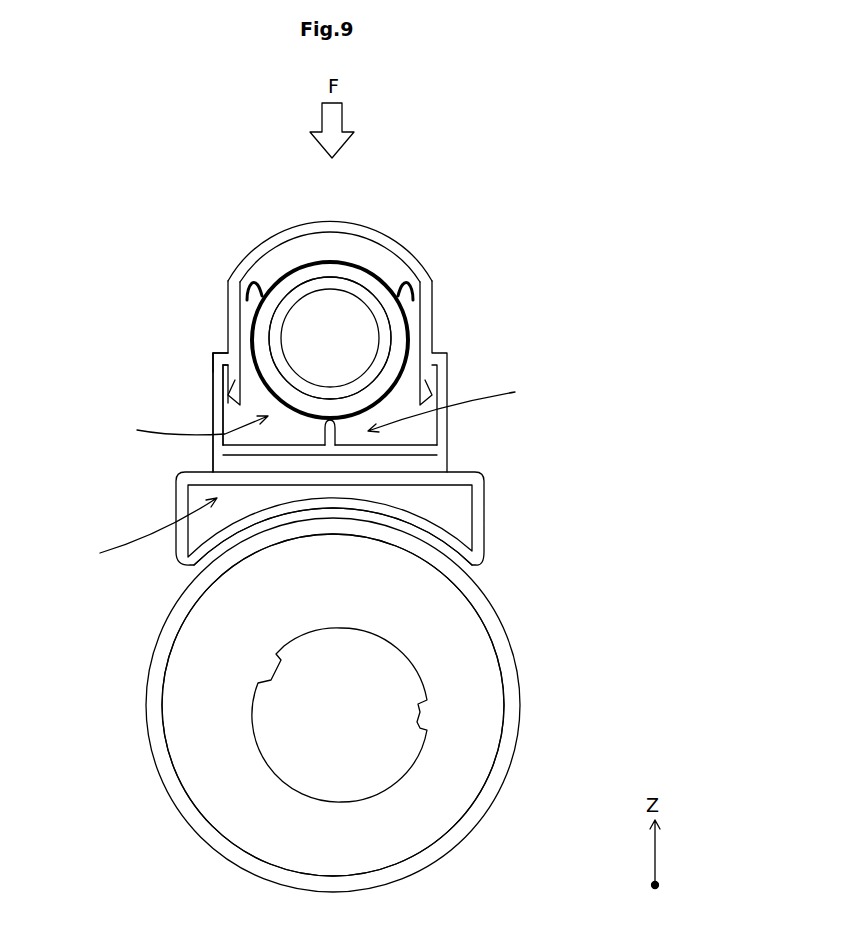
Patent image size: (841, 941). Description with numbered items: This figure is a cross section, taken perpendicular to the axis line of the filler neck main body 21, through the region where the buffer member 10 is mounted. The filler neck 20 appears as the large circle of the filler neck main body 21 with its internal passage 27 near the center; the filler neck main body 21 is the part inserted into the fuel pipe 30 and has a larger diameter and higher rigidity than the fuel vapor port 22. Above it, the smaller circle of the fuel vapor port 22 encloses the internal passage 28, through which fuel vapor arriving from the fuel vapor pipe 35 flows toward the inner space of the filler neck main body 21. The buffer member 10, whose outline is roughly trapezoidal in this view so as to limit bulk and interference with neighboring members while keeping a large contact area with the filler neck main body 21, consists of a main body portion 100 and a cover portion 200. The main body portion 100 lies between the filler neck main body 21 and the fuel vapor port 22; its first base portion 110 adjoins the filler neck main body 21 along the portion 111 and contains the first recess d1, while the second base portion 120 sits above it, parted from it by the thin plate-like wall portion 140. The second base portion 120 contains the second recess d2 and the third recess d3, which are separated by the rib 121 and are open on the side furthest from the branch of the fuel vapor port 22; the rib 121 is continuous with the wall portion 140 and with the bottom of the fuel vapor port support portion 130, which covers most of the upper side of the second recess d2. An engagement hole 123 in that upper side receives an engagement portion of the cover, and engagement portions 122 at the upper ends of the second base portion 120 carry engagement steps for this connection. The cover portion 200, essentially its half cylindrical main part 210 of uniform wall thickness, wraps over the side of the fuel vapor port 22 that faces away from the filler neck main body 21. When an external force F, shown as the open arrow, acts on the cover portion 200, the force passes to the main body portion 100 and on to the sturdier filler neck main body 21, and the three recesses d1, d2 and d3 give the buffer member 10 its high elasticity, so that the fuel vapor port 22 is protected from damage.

The buffer member 10 is at (624, 229).
The cover portion 200 is at (536, 344).
The main part 210 is at (378, 228).
The fuel vapor port support portion 130 is at (412, 294).
The engagement hole 123 is at (203, 344).
The engagement portions 122 is at (212, 388).
The rib 121 is at (213, 472).
The second base portion 120 is at (440, 432).
The wall portion 140 is at (213, 473).
The main body portion 100 is at (570, 480).
The first base portion 110 is at (485, 520).
The drum facing surface 111 is at (268, 513).
The fuel vapor pipe 35 is at (316, 270).
The fuel vapor port 22 is at (287, 290).
The internal passage 28 is at (330, 338).
The internal passage 27 is at (339, 715).
The filler neck 20 is at (468, 648).
The filler neck main body 21 is at (333, 705).
The fuel pipe 30 is at (520, 708).
The first recess d1 is at (143, 530).
The second recess d2 is at (186, 430).
The third recess d3 is at (455, 403).